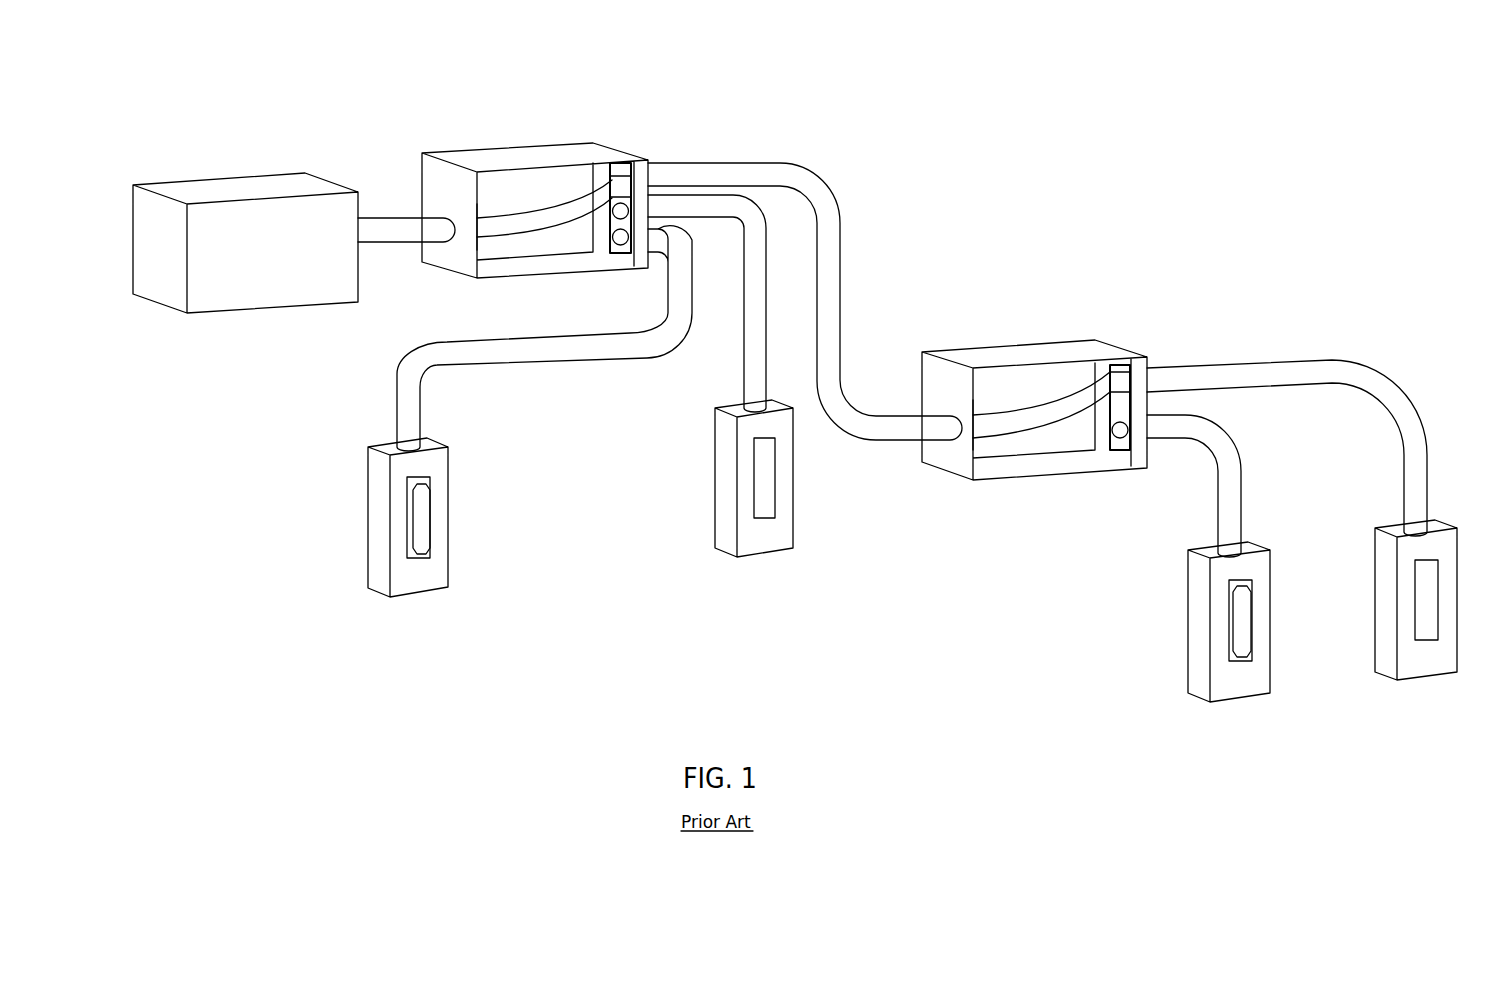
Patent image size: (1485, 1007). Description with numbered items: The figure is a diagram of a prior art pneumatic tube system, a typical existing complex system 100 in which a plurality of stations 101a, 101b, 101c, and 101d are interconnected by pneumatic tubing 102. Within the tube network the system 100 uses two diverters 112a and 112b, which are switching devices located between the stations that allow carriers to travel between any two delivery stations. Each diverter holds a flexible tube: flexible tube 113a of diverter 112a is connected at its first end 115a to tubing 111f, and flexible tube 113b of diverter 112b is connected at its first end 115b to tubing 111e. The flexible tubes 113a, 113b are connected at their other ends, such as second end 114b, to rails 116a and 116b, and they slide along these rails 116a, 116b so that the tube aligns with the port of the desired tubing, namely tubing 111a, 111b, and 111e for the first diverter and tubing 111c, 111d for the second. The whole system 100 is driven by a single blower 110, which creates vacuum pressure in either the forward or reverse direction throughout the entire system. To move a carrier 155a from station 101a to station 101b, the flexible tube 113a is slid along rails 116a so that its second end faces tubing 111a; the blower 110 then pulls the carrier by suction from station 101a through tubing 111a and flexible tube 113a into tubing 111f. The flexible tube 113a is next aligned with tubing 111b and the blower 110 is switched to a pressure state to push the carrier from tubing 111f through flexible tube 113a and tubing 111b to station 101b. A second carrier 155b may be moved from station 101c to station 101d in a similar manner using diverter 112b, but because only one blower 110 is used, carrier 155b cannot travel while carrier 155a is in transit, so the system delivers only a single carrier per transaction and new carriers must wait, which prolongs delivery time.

The complex system 100 is at (1140, 131).
The station 101a is at (444, 563).
The station 101b is at (767, 552).
The station 101c is at (1259, 664).
The station 101d is at (1430, 675).
The pneumatic tubing 102 is at (805, 265).
The blower 110 is at (278, 178).
The tubing 111a is at (527, 353).
The tubing 111b is at (738, 332).
The tubing 111c is at (1237, 500).
The tubing 111d is at (1272, 360).
The tubing 111e is at (843, 318).
The tubing 111f is at (410, 213).
The diverter 112a is at (526, 207).
The diverter 112b is at (1043, 417).
The flexible tube 113a is at (528, 223).
The flexible tube 113b is at (1047, 410).
The second end 114b is at (1130, 353).
The first end 115a is at (474, 240).
The first end 115b is at (975, 427).
The rails 116a is at (614, 253).
The rails 116b is at (1117, 450).
The carrier 155a is at (428, 525).
The carrier 155b is at (1248, 625).